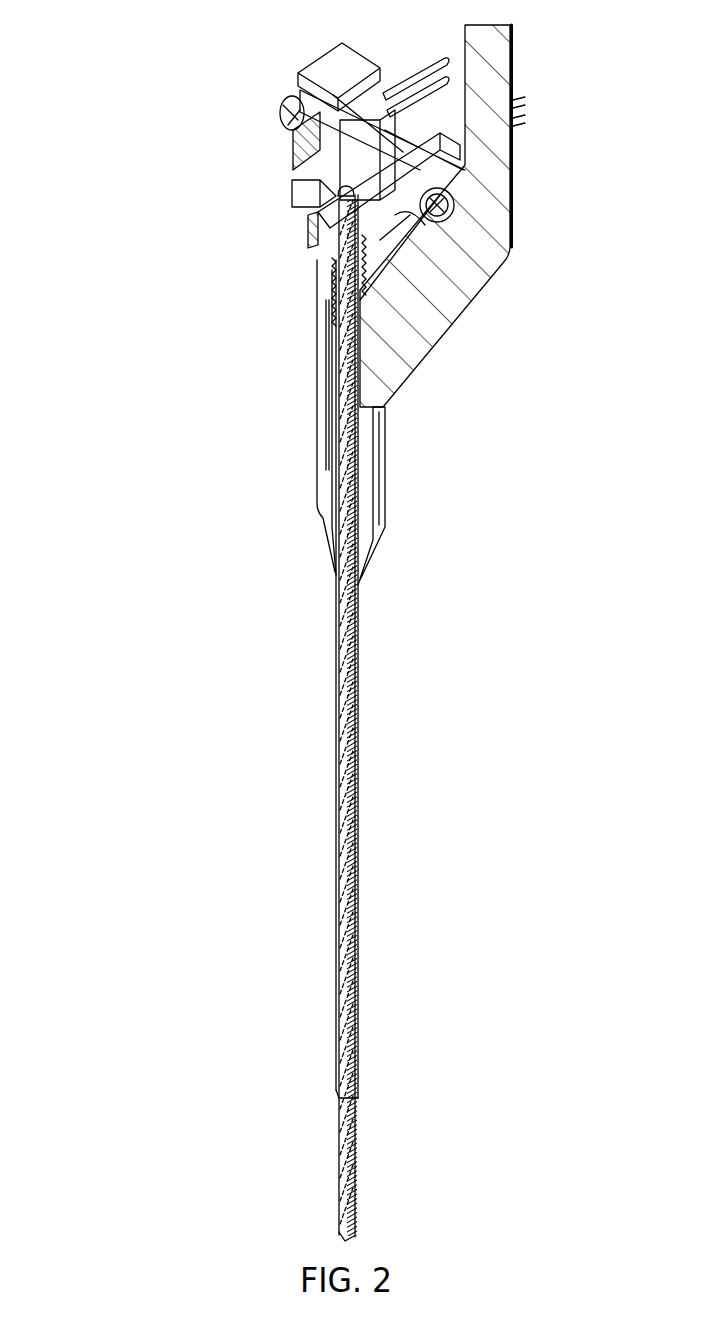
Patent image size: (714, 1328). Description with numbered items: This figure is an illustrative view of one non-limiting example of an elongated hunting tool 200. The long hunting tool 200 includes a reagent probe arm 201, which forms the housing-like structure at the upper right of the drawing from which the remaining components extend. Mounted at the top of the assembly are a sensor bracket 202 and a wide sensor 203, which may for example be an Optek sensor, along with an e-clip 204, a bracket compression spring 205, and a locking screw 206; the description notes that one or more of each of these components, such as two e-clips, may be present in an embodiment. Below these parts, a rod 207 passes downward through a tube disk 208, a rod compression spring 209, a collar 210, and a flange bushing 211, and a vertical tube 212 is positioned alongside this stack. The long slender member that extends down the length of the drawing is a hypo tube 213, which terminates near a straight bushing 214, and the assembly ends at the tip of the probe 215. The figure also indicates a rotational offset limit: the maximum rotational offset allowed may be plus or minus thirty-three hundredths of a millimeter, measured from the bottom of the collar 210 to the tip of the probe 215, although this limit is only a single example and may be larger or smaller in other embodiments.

The elongated hunting tool 200 is at (138, 469).
The reagent probe arm 201 is at (463, 297).
The sensor bracket 202 is at (322, 73).
The wide sensor 203 is at (300, 150).
The e-clip 204 is at (340, 193).
The bracket compression spring 205 is at (308, 232).
The locking screw 206 is at (322, 262).
The rod 207 is at (338, 310).
The tube disk 208 is at (333, 373).
The rod compression spring 209 is at (333, 427).
The collar 210 is at (330, 467).
The flange bushing 211 is at (337, 507).
The vertical tube 212 is at (357, 475).
The hypo tube 213 is at (336, 1003).
The straight bushing 214 is at (337, 1075).
The tip of the probe 215 is at (356, 1226).